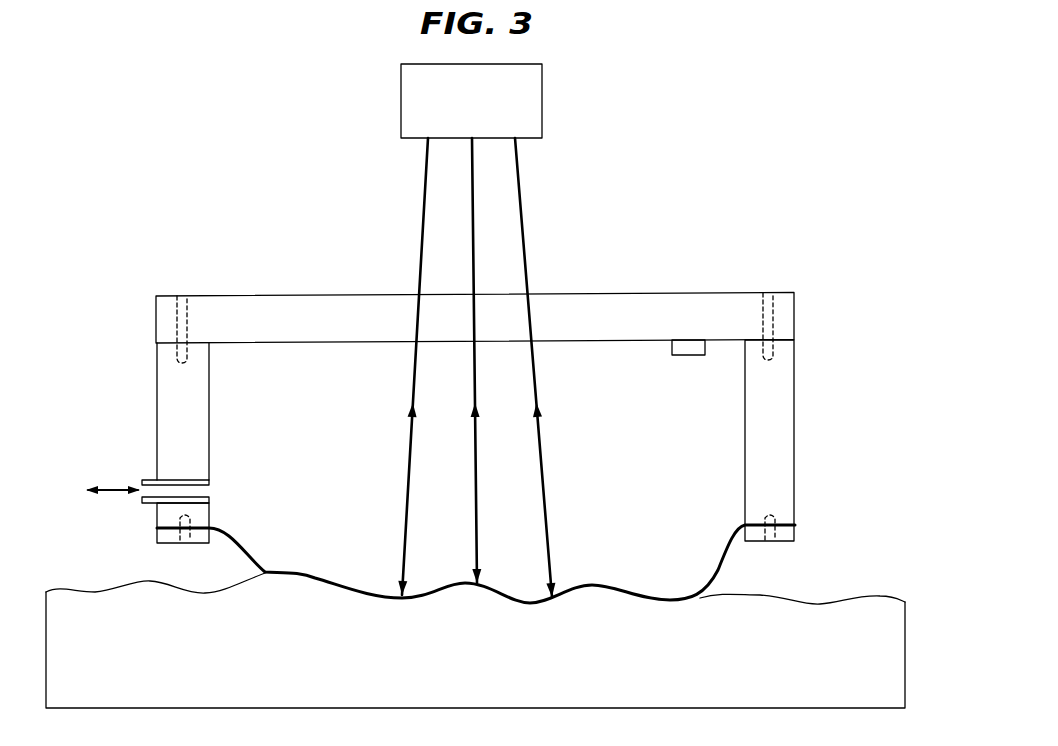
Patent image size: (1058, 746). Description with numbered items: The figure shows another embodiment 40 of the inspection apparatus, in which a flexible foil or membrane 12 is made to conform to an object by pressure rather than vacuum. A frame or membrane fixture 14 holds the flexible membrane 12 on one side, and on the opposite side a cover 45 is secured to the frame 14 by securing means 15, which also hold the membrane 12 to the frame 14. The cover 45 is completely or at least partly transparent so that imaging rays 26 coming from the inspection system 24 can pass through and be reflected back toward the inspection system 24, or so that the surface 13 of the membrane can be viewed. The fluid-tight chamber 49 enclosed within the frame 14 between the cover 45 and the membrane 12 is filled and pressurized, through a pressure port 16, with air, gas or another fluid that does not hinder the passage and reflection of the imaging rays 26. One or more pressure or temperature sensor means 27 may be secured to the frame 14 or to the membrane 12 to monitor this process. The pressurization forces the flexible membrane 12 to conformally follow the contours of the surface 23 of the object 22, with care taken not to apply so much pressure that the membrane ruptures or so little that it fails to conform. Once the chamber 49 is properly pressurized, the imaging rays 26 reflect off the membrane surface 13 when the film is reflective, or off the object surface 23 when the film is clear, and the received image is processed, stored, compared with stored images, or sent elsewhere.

The embodiment 40 is at (724, 134).
The inspection system 24 is at (542, 84).
The imaging rays 26 is at (556, 482).
The cover 45 is at (335, 300).
The frame 14 is at (209, 428).
The securing means 15 is at (180, 296).
The pressure port 16 is at (142, 478).
The sensor means 27 is at (690, 357).
The surface 13 is at (300, 572).
The flexible membrane 12 is at (722, 563).
The chamber 49 is at (523, 534).
The object 22 is at (360, 659).
The surface 23 is at (862, 595).